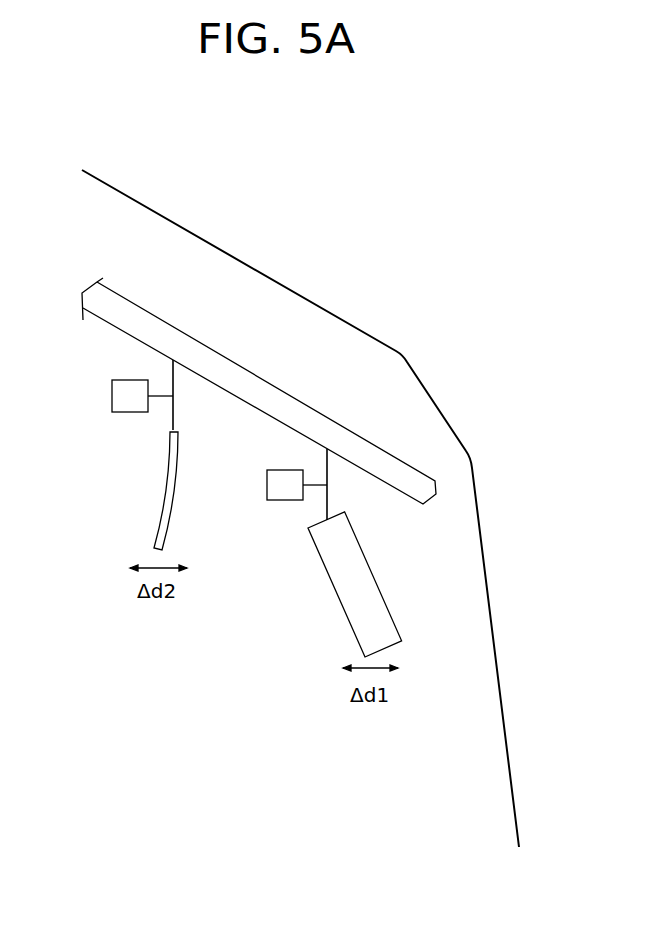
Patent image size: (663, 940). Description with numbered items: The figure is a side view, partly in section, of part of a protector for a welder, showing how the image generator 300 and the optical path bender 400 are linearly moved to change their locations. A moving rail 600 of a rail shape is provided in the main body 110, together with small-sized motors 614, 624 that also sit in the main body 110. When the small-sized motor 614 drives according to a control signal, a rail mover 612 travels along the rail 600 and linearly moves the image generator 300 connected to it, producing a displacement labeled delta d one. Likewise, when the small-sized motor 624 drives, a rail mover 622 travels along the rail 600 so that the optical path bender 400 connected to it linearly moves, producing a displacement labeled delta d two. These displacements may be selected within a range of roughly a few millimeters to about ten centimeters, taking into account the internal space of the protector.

The main body 110 is at (341, 318).
The moving rail 600 is at (263, 377).
The rail mover 622 is at (173, 410).
The small-sized motor 624 is at (112, 395).
The optical path bender 400 is at (178, 493).
The rail mover 612 is at (327, 490).
The small-sized motor 614 is at (275, 500).
The image generator 300 is at (390, 603).